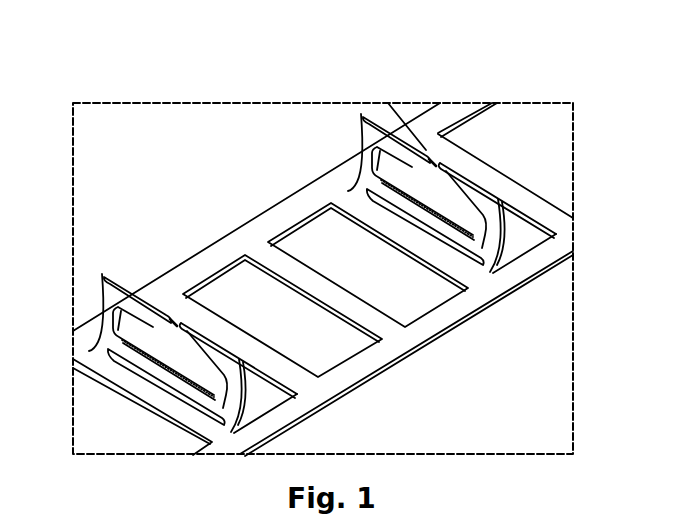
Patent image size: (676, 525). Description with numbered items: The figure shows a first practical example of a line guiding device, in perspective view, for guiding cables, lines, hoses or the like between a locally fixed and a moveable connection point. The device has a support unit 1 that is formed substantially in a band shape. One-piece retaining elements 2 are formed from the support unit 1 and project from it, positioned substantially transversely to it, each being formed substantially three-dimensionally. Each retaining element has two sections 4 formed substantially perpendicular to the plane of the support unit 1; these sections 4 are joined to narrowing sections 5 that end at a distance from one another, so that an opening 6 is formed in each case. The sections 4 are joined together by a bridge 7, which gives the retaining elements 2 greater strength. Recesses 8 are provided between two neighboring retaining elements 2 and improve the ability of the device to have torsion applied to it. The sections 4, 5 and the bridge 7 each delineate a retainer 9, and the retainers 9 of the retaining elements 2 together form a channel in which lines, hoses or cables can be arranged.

The support unit 1 is at (470, 302).
The retaining elements 2 is at (309, 259).
The sections 4 is at (100, 321).
The narrowing sections 5 is at (128, 287).
The opening 6 is at (437, 158).
The bridge 7 is at (164, 368).
The recesses 8 is at (352, 345).
The retainer 9 is at (179, 352).